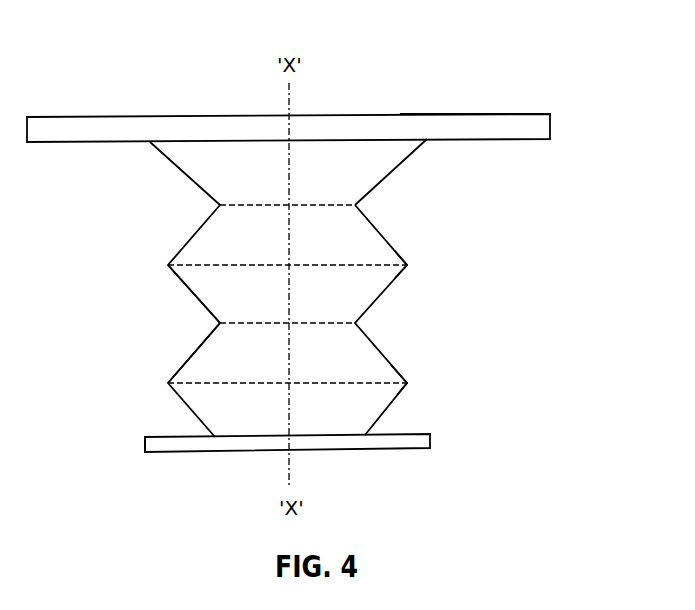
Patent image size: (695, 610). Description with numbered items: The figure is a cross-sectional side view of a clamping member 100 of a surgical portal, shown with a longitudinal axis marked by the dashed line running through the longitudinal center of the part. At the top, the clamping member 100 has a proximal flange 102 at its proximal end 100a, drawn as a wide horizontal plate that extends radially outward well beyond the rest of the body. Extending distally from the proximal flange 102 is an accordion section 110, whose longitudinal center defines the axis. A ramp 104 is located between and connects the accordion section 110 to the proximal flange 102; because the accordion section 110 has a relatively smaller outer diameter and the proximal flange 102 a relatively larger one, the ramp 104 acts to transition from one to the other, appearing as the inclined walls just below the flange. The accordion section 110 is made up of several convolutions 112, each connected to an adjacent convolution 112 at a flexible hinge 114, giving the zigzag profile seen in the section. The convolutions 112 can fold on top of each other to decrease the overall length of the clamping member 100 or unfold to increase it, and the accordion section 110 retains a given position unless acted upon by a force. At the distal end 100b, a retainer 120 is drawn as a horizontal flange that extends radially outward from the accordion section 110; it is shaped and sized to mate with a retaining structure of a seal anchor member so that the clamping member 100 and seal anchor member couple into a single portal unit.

The clamping member 100 is at (547, 46).
The proximal end 100a is at (550, 113).
The distal end 100b is at (145, 450).
The proximal flange 102 is at (445, 116).
The ramp 104 is at (393, 172).
The accordion section 110 is at (513, 203).
The convolutions 112 is at (394, 250).
The flexible hinge 114 is at (220, 323).
The retainer 120 is at (415, 449).